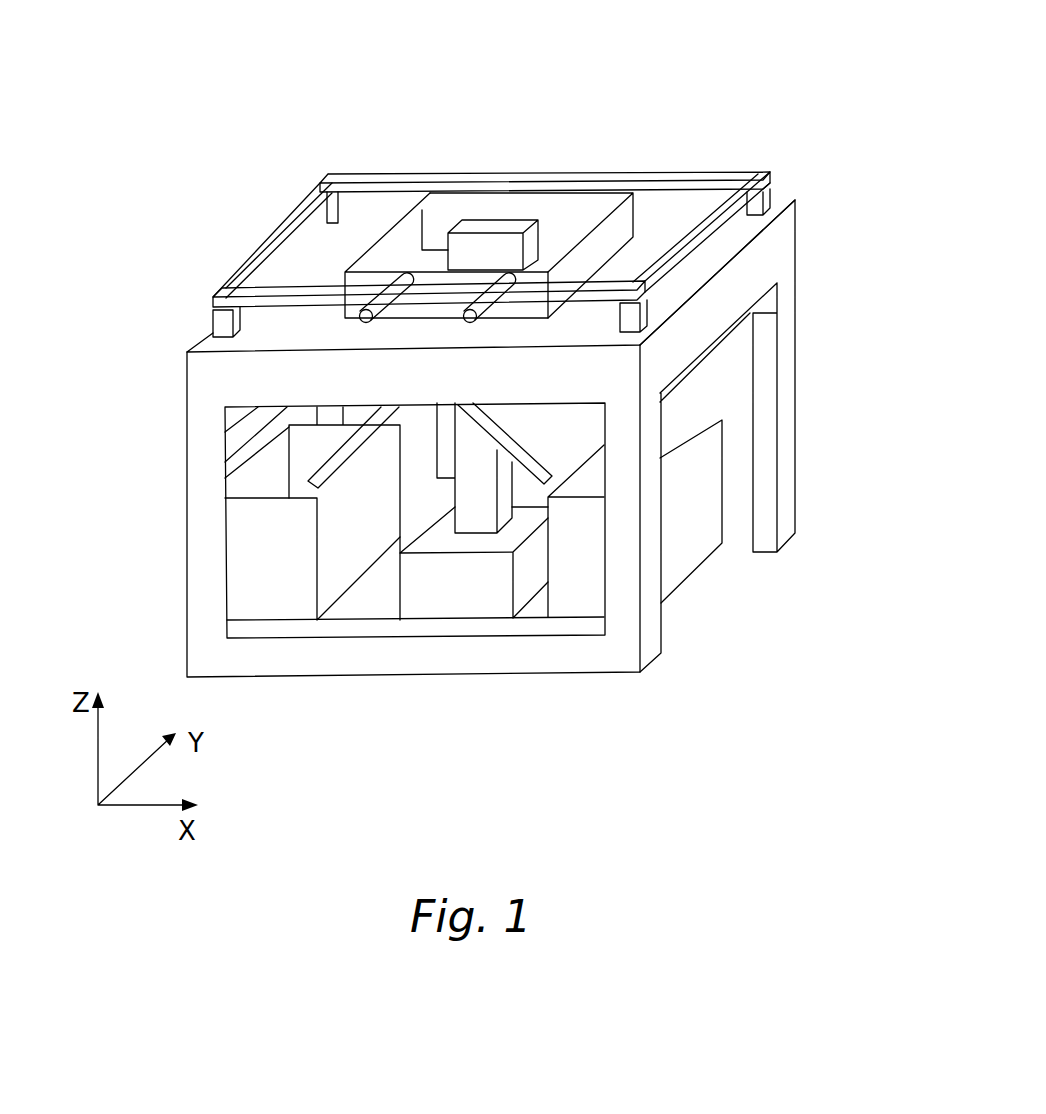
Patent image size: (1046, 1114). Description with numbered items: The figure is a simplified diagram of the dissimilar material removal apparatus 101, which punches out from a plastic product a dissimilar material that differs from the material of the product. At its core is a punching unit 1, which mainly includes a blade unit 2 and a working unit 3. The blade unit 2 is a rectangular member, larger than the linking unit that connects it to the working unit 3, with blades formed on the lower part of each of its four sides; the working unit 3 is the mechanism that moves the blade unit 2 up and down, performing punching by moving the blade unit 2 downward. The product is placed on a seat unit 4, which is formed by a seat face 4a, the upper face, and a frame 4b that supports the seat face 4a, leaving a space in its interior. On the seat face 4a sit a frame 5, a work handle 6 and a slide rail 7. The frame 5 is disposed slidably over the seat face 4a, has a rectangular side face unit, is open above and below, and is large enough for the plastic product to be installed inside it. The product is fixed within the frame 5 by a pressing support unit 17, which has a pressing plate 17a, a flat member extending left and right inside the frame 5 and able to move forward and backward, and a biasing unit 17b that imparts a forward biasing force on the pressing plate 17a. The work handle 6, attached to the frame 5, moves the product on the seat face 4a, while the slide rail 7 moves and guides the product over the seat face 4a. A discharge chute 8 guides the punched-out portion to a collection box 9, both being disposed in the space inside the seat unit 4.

The dissimilar material removal apparatus 101 is at (200, 238).
The punching unit 1 is at (427, 262).
The blade unit 2 is at (483, 222).
The working unit 3 is at (473, 441).
The seat unit 4 is at (222, 372).
The seat face 4a is at (220, 340).
The frame 4b is at (202, 497).
The frame 5 is at (632, 216).
The work handle 6 is at (490, 300).
The slide rail 7 is at (665, 267).
The discharge chute 8 is at (538, 442).
The collection box 9 is at (272, 565).
The pressing support unit 17 is at (700, 80).
The pressing plate 17a is at (572, 213).
The biasing unit 17b is at (528, 185).